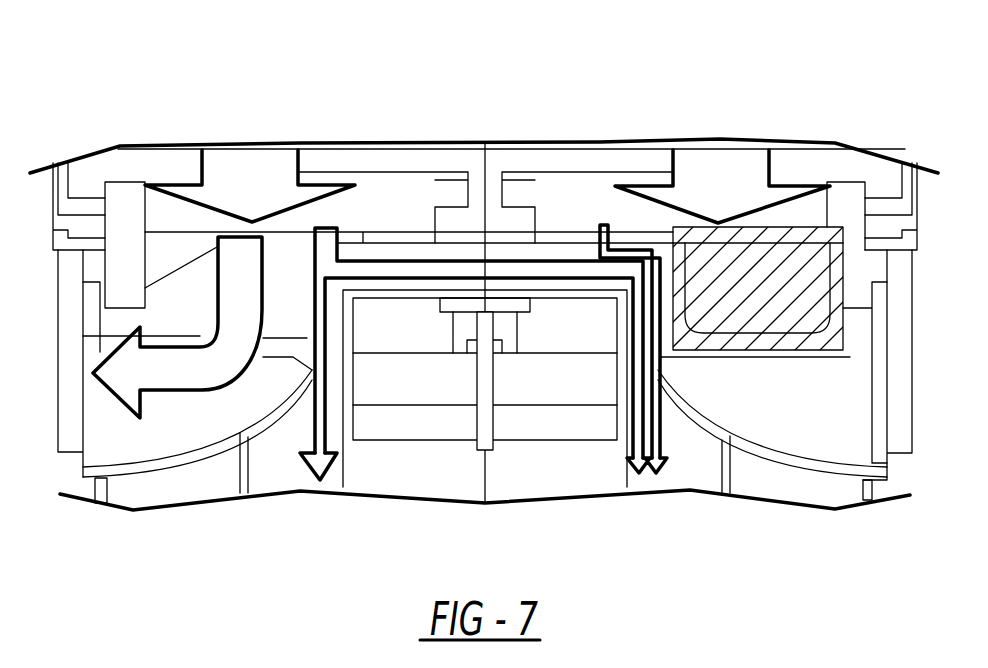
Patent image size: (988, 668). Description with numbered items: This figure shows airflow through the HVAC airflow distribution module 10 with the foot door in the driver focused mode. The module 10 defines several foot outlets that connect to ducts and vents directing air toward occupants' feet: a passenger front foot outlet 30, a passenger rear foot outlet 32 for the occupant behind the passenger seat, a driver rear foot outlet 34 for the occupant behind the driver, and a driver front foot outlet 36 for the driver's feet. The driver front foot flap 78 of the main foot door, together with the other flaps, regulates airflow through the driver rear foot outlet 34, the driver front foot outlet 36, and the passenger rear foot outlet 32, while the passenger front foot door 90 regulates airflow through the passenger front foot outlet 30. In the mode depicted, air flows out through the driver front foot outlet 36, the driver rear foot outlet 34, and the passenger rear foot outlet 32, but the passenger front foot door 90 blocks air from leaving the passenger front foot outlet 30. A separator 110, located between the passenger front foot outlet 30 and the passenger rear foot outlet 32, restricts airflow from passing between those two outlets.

The HVAC airflow distribution module 10 is at (248, 83).
The passenger front foot outlet 30 is at (888, 390).
The passenger rear foot outlet 32 is at (667, 467).
The driver rear foot outlet 34 is at (305, 480).
The driver front foot outlet 36 is at (100, 410).
The driver front foot flap 78 is at (173, 213).
The passenger front foot door 90 is at (838, 270).
The separator 110 is at (663, 327).